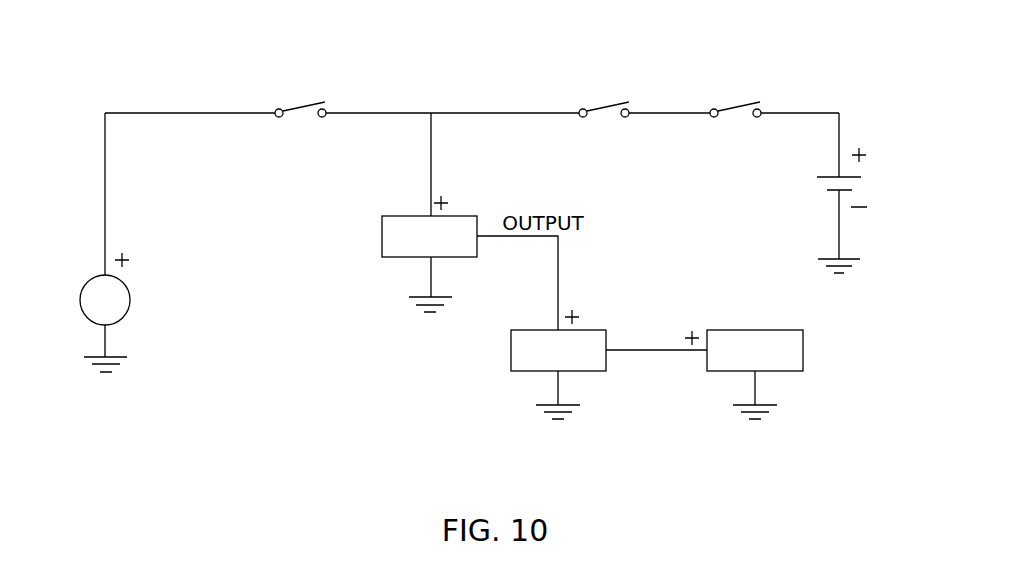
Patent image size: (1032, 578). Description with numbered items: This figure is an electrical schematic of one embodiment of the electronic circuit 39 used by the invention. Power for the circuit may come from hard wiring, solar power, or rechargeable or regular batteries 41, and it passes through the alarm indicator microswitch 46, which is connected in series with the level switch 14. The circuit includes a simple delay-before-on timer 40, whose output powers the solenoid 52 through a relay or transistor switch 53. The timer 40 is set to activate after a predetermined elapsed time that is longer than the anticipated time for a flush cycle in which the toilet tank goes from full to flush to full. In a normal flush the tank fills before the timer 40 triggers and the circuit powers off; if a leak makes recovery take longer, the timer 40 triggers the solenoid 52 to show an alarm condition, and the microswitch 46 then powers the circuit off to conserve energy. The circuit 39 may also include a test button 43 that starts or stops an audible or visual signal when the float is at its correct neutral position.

The electronic circuit 39 is at (867, 81).
The test button 43 is at (300, 96).
The level switch 14 is at (604, 96).
The alarm indicator microswitch 46 is at (735, 96).
The batteries 41 is at (864, 193).
The timer 40 is at (382, 234).
The relay or transistor switch 53 is at (606, 340).
The solenoid 52 is at (803, 350).